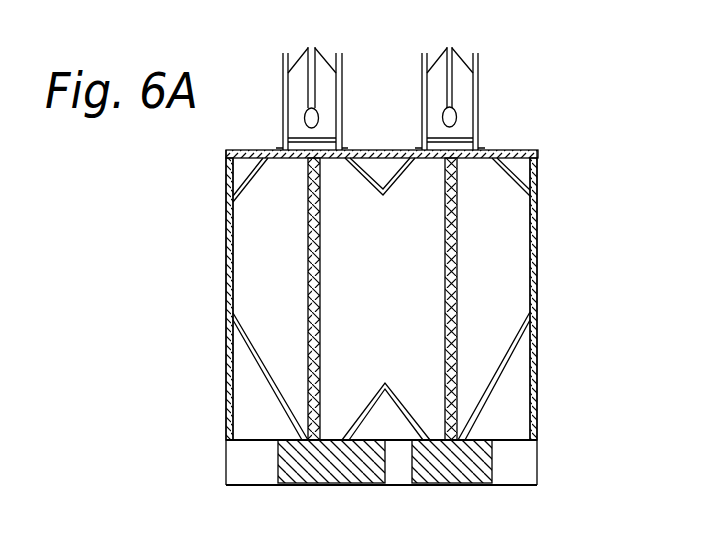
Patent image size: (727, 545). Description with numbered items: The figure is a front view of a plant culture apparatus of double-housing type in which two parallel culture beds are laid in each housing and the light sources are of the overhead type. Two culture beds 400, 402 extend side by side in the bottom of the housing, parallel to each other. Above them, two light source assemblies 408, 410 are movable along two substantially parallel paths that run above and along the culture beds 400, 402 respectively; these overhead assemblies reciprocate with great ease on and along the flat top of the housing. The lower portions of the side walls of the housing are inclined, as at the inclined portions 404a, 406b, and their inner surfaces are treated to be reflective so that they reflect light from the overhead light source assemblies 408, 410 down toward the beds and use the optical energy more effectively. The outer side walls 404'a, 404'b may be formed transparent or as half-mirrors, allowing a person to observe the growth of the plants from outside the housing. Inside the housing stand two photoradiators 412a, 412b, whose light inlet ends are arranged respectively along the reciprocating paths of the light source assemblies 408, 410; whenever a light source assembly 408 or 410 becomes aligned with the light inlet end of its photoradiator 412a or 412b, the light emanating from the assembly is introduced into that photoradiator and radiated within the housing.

The culture bed 400 is at (300, 484).
The culture bed 402 is at (446, 483).
The side wall 404'a is at (188, 299).
The side wall 404'b is at (571, 299).
The inclined lower side wall portion 404a is at (258, 352).
The inclined lower side wall portion 406b is at (507, 348).
The photoradiator 412a is at (320, 282).
The photoradiator 412b is at (457, 213).
The light source assembly 408 is at (283, 115).
The light source assembly 410 is at (466, 76).